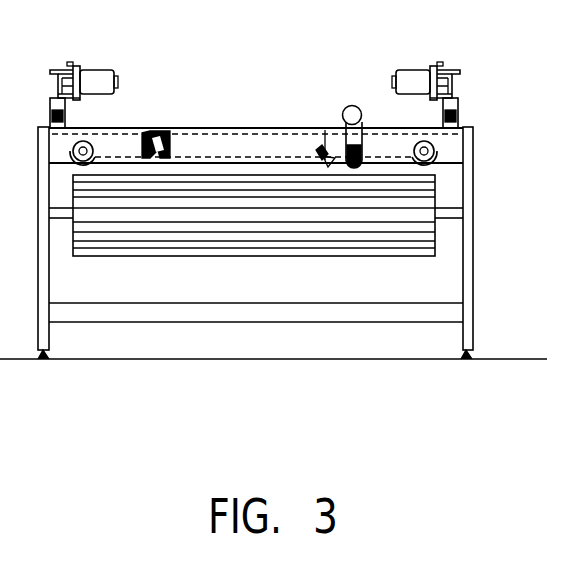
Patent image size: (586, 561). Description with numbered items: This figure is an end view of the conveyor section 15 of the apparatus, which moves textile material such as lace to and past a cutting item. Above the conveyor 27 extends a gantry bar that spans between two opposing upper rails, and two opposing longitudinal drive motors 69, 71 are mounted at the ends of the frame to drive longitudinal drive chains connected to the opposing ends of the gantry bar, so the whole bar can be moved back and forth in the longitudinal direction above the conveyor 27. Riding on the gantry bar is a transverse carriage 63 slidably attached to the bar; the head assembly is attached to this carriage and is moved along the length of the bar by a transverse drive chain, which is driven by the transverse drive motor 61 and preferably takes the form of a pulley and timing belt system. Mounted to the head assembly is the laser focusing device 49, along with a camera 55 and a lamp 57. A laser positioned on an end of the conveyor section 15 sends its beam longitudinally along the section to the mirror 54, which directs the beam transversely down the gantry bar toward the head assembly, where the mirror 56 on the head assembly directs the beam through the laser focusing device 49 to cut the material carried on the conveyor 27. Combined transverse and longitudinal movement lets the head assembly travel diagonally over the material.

The conveyor section 15 is at (473, 310).
The conveyor 27 is at (383, 258).
The laser focusing device 49 is at (365, 122).
The mirror 54 is at (458, 112).
The camera 55 is at (365, 165).
The mirror 56 is at (347, 107).
The lamp 57 is at (314, 148).
The transverse drive motor 61 is at (161, 132).
The transverse carriage 63 is at (325, 128).
The longitudinal drive motor 69 is at (115, 84).
The longitudinal drive motor 71 is at (396, 83).